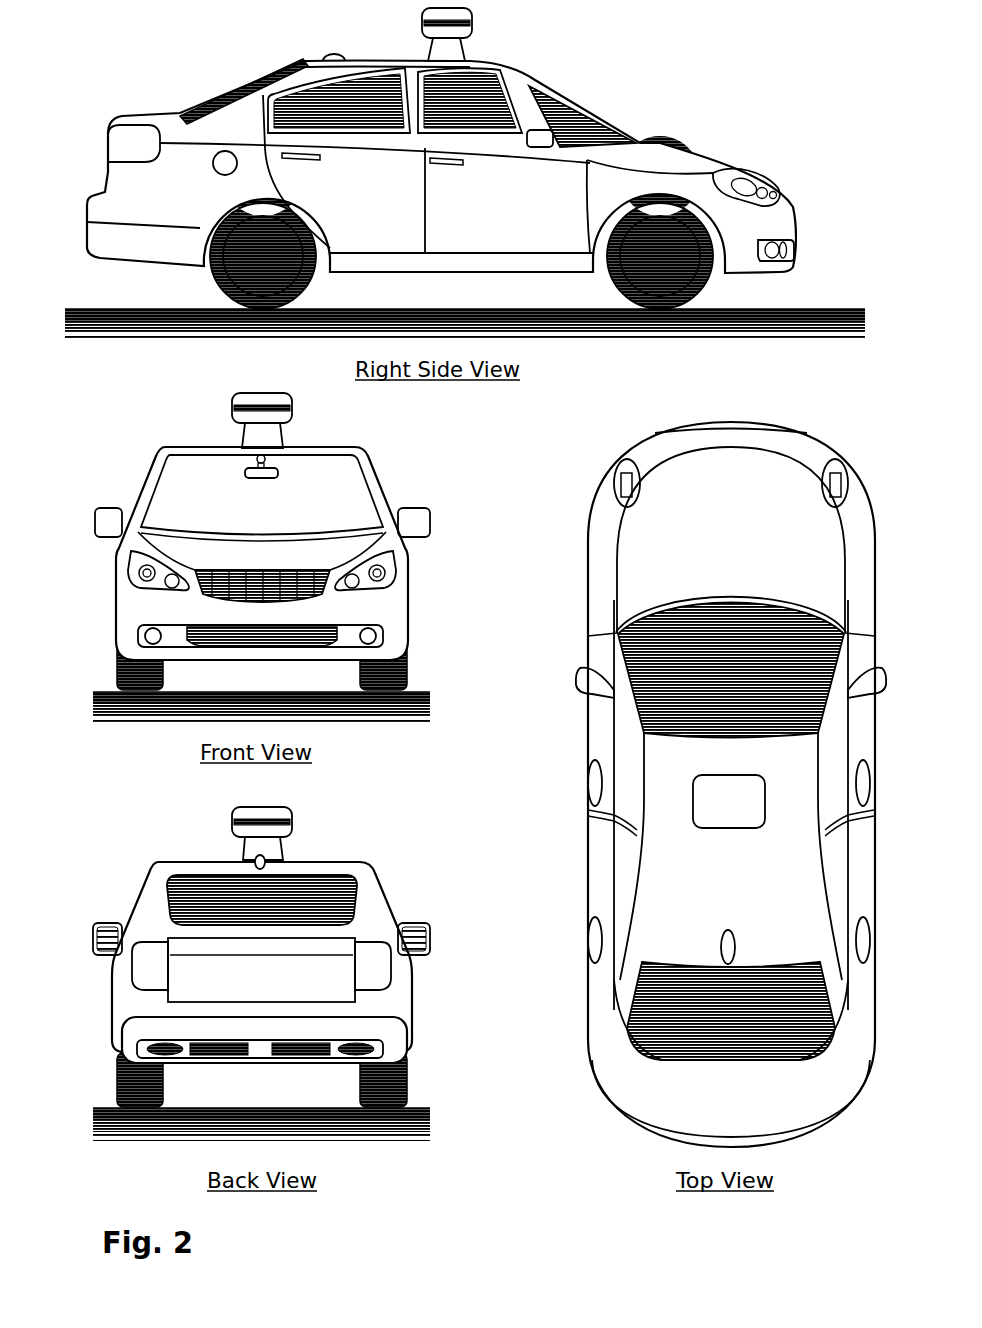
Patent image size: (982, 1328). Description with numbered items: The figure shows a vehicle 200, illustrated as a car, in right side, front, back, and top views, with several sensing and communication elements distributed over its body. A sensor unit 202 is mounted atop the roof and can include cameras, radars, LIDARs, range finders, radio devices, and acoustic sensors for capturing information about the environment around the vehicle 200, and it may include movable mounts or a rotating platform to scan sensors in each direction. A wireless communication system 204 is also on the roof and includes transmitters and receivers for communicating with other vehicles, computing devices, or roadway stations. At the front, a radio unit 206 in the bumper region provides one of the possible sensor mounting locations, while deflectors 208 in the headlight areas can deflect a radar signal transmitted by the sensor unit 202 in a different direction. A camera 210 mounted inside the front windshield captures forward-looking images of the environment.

The vehicle 200 is at (78, 106).
The sensor unit 202 is at (473, 30).
The wireless communication system 204 is at (332, 54).
The radio unit 206 is at (797, 248).
The deflectors 208 is at (778, 193).
The camera 210 is at (278, 461).